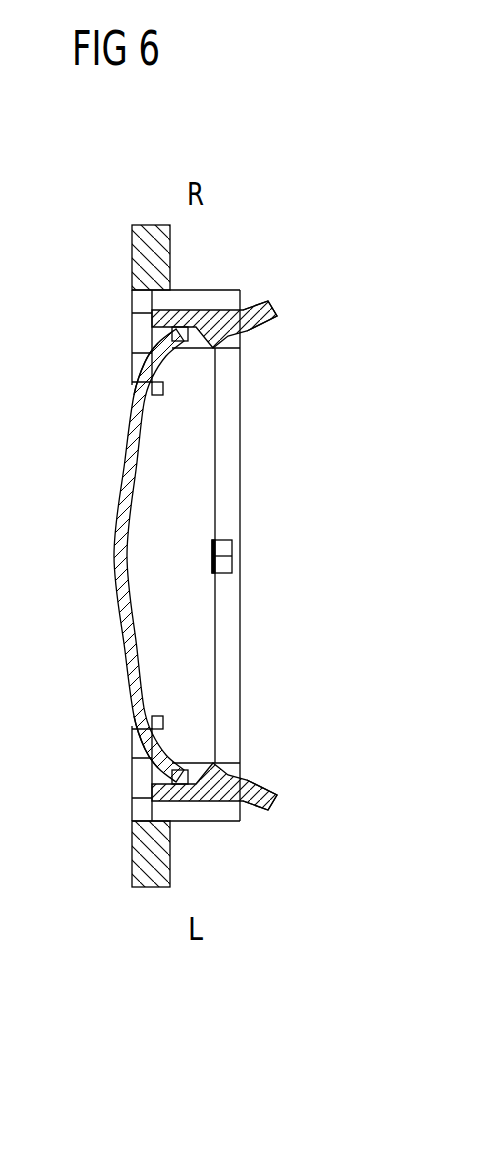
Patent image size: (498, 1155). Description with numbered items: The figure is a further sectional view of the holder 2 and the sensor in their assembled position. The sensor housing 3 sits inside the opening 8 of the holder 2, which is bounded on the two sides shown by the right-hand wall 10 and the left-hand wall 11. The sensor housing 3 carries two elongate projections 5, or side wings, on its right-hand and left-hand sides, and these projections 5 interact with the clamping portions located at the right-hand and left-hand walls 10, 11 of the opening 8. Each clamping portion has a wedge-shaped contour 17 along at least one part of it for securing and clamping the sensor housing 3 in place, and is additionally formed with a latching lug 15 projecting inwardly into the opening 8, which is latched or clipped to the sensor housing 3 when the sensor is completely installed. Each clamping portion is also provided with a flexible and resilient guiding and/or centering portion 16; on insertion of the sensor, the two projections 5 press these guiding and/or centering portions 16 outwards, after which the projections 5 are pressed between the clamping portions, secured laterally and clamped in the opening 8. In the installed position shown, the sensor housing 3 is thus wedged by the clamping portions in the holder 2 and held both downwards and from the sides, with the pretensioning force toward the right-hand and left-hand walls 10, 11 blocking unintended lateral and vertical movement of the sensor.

The holder 2 is at (150, 892).
The sensor housing 3 is at (115, 550).
The projection 5 is at (192, 338).
The opening 8 is at (134, 387).
The right-hand wall 10 is at (148, 336).
The left-hand wall 11 is at (150, 791).
The latching lug 15 is at (221, 341).
The guiding and/or centering portion 16 is at (281, 324).
The wedge-shaped contour 17 is at (190, 311).